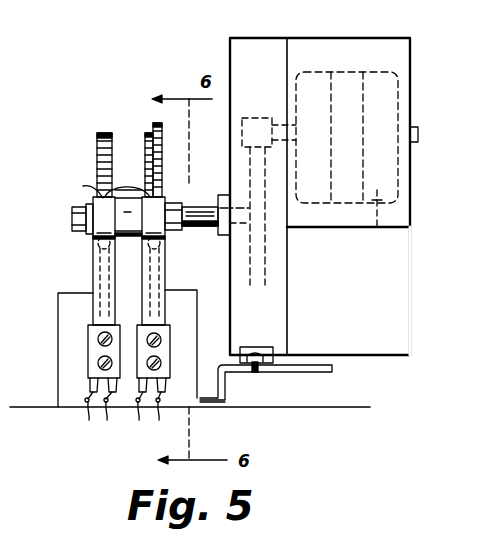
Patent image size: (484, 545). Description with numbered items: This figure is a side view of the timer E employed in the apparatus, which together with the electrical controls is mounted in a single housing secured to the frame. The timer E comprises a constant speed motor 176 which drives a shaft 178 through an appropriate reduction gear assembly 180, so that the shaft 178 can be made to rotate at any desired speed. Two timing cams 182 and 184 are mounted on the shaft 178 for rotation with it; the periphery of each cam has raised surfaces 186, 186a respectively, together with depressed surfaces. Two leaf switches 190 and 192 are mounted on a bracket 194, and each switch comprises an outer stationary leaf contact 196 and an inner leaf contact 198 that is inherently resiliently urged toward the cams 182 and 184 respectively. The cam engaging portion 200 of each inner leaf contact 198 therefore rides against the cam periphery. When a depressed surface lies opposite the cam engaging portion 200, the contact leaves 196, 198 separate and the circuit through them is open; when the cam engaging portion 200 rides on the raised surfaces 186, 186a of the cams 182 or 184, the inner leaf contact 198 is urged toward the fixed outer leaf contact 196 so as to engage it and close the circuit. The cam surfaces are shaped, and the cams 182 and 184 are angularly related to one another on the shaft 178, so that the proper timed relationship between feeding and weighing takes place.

The constant speed motor 176 is at (379, 228).
The shaft 178 is at (195, 207).
The reduction gear assembly 180 is at (257, 232).
The timing cam 182 is at (148, 131).
The timing cam 184 is at (97, 147).
The raised surface 186 is at (160, 167).
The raised surface 186a is at (107, 132).
The leaf switch 190 is at (190, 300).
The leaf switch 192 is at (97, 318).
The bracket 194 is at (182, 393).
The outer stationary leaf contact 196 is at (97, 262).
The inner leaf contact 198 is at (93, 230).
The cam engaging portion 200 is at (95, 187).
The timer E is at (125, 118).